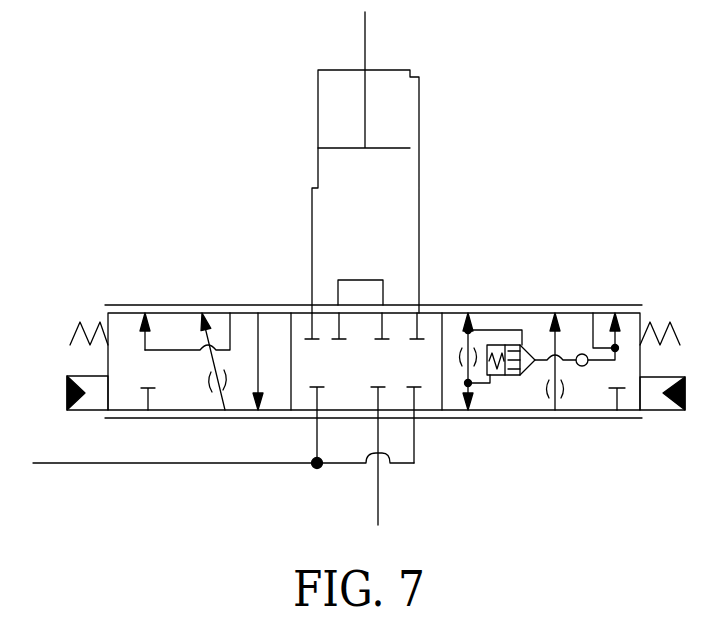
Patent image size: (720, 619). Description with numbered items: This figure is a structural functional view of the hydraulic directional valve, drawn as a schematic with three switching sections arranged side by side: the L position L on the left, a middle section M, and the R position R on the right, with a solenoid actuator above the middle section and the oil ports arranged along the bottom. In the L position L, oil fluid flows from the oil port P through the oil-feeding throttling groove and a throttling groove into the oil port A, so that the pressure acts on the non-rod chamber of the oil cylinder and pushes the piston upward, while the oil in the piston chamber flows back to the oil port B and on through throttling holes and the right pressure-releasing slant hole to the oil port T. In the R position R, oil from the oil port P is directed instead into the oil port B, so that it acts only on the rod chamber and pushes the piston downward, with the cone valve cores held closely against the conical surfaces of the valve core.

The L position L is at (163, 305).
The R position R is at (499, 306).
The middle (neutral) position section with solenoid actuator M is at (398, 305).
The oil port A is at (302, 300).
The oil port B is at (424, 300).
The oil port T is at (227, 446).
The oil port P is at (384, 458).